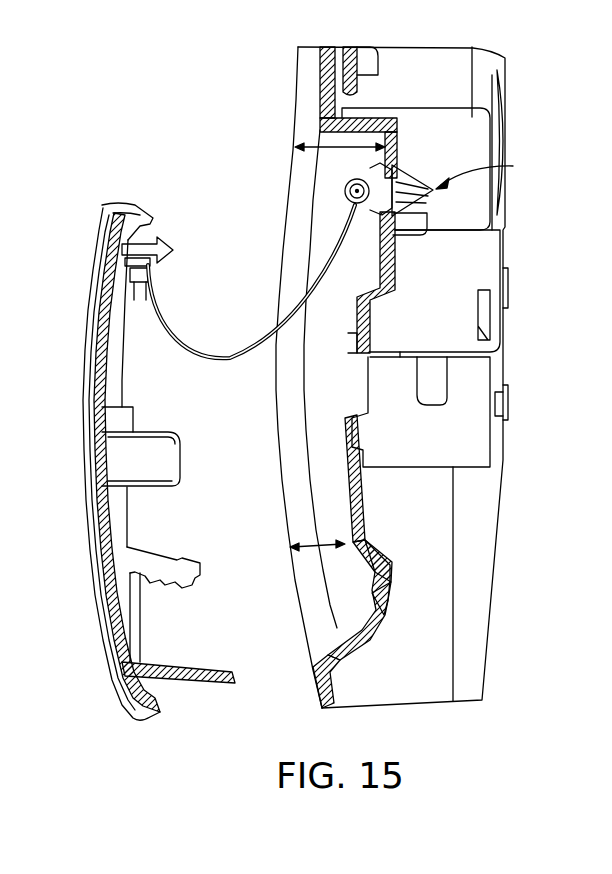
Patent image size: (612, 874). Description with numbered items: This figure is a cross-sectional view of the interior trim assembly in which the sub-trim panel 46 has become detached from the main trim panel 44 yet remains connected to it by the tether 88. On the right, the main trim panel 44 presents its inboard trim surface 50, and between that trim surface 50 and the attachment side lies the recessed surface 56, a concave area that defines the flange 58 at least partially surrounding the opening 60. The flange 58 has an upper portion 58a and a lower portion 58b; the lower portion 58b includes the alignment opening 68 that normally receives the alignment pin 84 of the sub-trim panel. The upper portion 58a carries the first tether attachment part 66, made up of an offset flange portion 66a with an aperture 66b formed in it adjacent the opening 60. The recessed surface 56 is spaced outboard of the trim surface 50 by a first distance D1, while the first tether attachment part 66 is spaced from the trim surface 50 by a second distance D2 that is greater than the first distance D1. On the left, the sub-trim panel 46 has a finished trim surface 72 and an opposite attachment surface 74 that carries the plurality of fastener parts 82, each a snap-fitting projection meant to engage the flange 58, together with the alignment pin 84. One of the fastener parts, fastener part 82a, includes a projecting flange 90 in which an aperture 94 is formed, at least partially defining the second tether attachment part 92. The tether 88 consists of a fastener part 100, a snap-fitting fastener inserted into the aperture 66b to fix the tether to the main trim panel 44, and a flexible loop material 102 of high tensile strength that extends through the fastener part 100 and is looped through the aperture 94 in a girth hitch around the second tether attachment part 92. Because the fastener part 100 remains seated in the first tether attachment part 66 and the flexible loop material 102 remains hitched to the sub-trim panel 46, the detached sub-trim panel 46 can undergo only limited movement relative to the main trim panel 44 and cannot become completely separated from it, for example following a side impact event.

The main trim panel 44 is at (432, 67).
The trim surface 50 is at (318, 85).
The upper portion 58a is at (396, 150).
The flange 58 is at (383, 627).
The lower portion 58b is at (378, 572).
The alignment opening 68 is at (392, 586).
The recessed surface 56 is at (353, 561).
The first distance D1 is at (302, 547).
The second distance D2 is at (337, 148).
The fastener part 100 is at (345, 202).
The tether 88 is at (469, 196).
The aperture 66b is at (406, 185).
The first tether attachment part 66 is at (394, 248).
The offset flange portion 66a is at (392, 280).
The opening 60 is at (370, 470).
The finished trim surface 72 is at (88, 400).
The attachment surface 74 is at (104, 377).
The sub-trim panel 46 is at (115, 249).
The fastener part 82a is at (150, 262).
The aperture 94 is at (130, 262).
The second tether attachment part 92 is at (130, 282).
The projecting flange 90 is at (139, 300).
The flexible loop material 102 is at (217, 358).
The fastener parts 82 is at (167, 458).
The alignment pin 84 is at (244, 672).